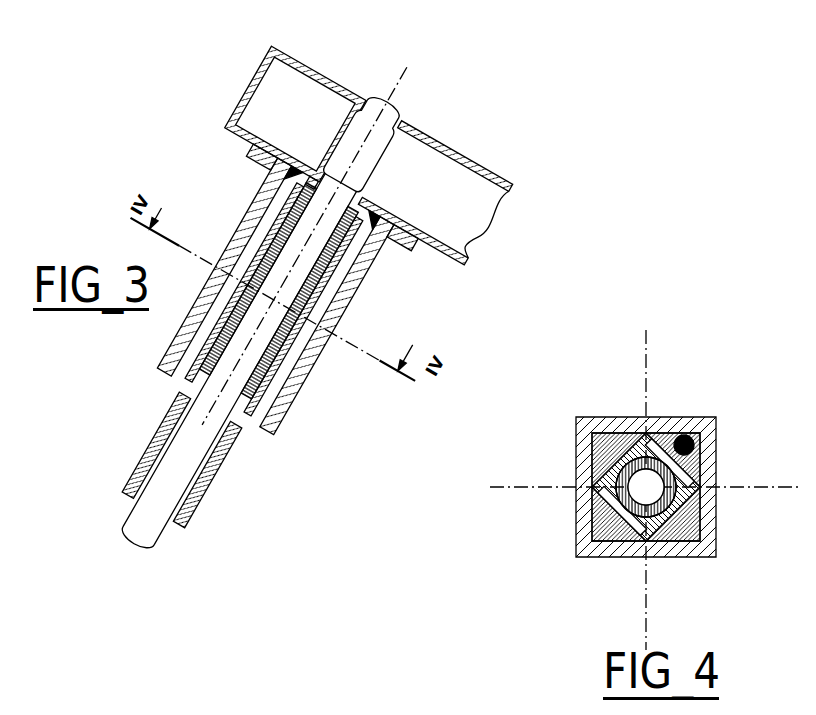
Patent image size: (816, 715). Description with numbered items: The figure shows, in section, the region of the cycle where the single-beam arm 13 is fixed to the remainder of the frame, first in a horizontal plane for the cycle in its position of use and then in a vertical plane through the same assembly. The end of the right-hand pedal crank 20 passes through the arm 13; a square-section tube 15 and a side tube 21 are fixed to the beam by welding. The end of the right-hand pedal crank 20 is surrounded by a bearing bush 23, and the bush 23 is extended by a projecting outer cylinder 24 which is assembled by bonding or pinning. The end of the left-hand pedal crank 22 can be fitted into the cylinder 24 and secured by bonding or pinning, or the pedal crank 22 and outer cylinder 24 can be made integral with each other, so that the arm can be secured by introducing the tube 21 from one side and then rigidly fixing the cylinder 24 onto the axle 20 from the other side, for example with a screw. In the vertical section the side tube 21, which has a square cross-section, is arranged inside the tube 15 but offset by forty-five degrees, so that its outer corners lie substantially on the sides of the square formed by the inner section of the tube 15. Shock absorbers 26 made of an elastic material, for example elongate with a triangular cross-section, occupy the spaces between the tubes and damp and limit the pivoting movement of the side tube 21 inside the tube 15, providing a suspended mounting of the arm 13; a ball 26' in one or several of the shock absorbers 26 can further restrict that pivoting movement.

In FIG. 3, the single-beam arm 13 is at (445, 147).
In FIG. 3, the square-section tube 15 is at (230, 238).
In FIG. 4, the square-section tube 15 is at (673, 427).
In FIG. 3, the right-hand pedal crank 20 is at (372, 110).
In FIG. 4, the right-hand pedal crank 20 is at (646, 487).
In FIG. 3, the side tube 21 is at (337, 270).
In FIG. 4, the side tube 21 is at (634, 438).
In FIG. 3, the left-hand pedal crank 22 is at (153, 533).
In FIG. 3, the bearing bush 23 is at (263, 372).
In FIG. 4, the bearing bush 23 is at (600, 478).
In FIG. 3, the outer cylinder 24 is at (200, 497).
In FIG. 4, the shock absorbers 26 is at (638, 537).
In FIG. 4, the ball 26' is at (742, 441).